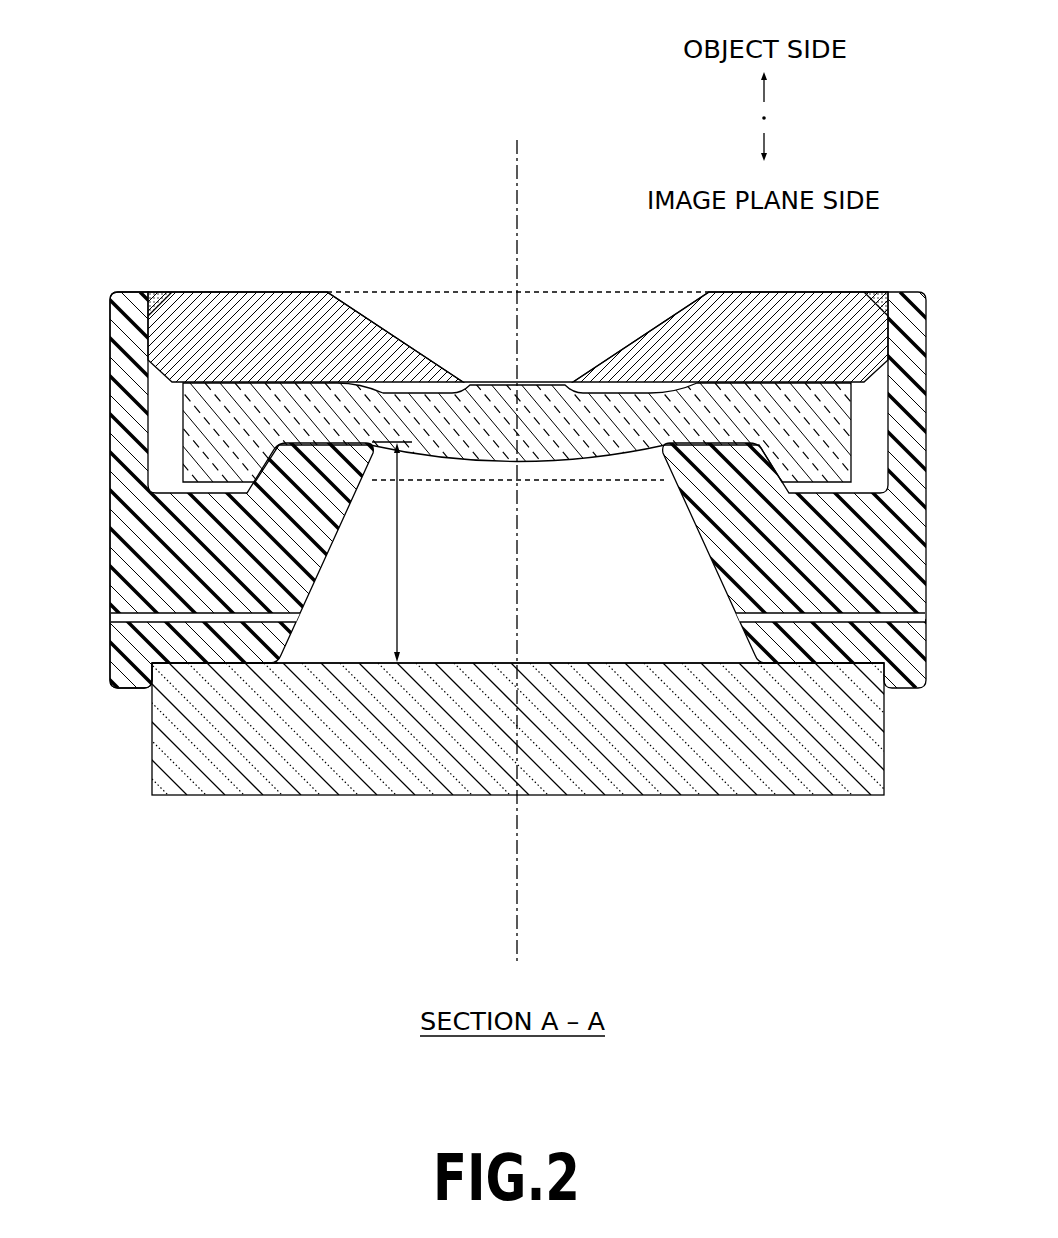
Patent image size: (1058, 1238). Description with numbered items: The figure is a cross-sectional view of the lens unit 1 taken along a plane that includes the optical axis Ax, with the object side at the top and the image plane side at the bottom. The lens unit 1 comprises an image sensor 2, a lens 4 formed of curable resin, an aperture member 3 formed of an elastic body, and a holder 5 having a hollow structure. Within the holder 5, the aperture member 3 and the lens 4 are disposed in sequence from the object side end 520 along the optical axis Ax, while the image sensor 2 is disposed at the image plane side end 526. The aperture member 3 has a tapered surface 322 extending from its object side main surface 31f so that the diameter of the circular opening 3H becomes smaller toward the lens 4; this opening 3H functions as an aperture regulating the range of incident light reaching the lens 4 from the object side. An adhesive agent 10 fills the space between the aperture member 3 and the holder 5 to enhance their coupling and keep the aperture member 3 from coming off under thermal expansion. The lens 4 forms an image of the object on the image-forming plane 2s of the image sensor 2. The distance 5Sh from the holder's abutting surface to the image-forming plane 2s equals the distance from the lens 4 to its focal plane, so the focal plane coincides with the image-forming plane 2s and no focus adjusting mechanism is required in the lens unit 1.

The lens unit 1 is at (578, 170).
The image sensor 2 is at (226, 776).
The image-forming plane 2s is at (606, 657).
The aperture member 3 is at (215, 291).
The adhesive agent 10 is at (160, 291).
The object side main surface 31f is at (271, 289).
The tapered surface 322 is at (352, 300).
The opening 3H is at (471, 339).
The lens 4 is at (183, 445).
The holder 5 is at (143, 599).
The object side end 520 is at (129, 286).
The image plane side end 526 is at (177, 671).
The distance 5Sh is at (518, 552).
The optical axis Ax is at (519, 277).